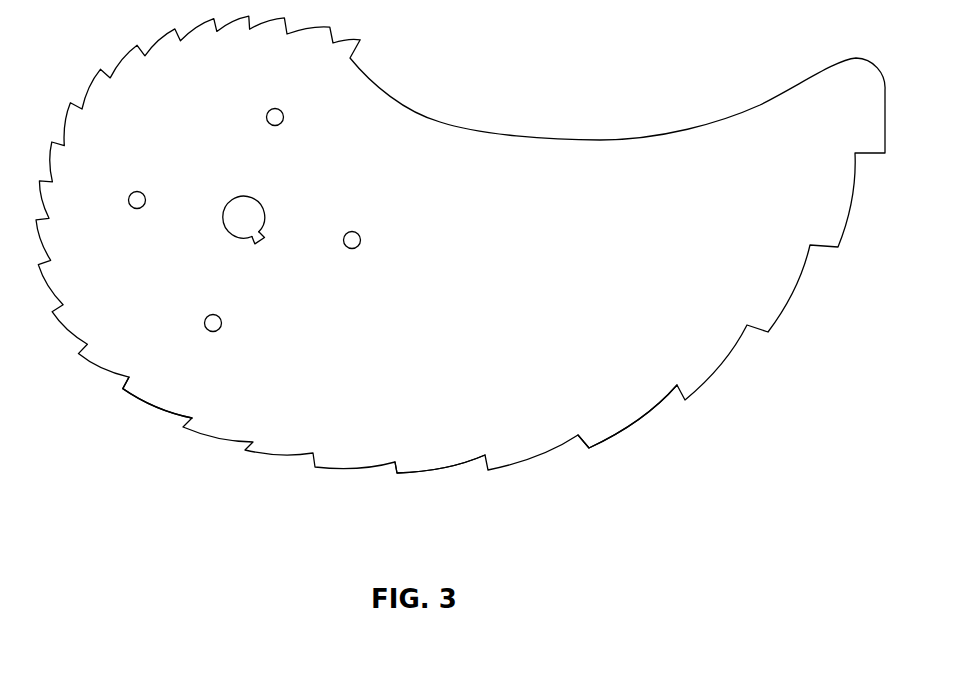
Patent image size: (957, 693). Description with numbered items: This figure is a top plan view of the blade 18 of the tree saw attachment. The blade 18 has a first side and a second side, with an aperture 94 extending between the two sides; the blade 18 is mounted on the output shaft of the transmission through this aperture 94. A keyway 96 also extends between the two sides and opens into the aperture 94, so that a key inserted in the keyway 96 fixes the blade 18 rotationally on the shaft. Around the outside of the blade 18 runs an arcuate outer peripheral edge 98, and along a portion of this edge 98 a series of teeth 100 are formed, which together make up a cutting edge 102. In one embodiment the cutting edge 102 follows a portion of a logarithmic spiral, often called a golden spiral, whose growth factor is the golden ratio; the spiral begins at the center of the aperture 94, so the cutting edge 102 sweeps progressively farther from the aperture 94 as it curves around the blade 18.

The blade 18 is at (527, 136).
The aperture 94 is at (259, 202).
The keyway 96 is at (263, 244).
The arcuate outer peripheral edge 98 is at (418, 473).
The teeth 100 is at (633, 428).
The cutting edge 102 is at (162, 408).